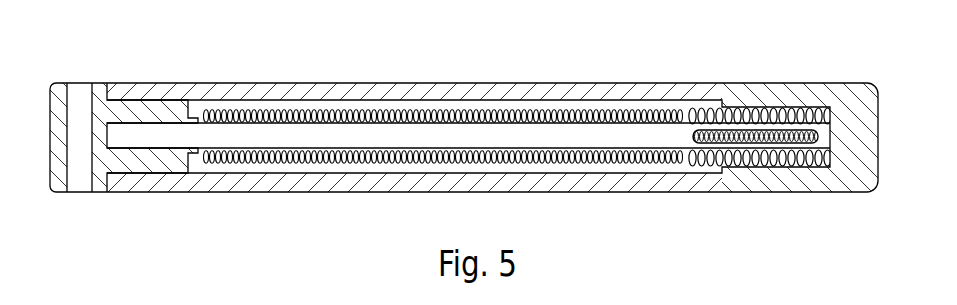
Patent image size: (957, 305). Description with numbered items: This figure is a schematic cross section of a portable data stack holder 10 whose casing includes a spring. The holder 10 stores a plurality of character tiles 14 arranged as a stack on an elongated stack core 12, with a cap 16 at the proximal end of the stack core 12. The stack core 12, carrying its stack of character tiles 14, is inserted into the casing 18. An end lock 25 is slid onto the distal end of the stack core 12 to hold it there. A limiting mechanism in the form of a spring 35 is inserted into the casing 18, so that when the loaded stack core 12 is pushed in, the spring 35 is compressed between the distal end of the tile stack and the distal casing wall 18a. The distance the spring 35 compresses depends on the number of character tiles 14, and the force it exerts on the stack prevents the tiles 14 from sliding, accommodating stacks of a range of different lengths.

The portable data stack holder 10 is at (134, 61).
The stack core 12 is at (355, 138).
The character tiles 14 is at (607, 112).
The cap 16 is at (100, 190).
The casing 18 is at (347, 83).
The distal casing wall 18a is at (848, 130).
The end lock 25 is at (745, 153).
The spring 35 is at (793, 110).